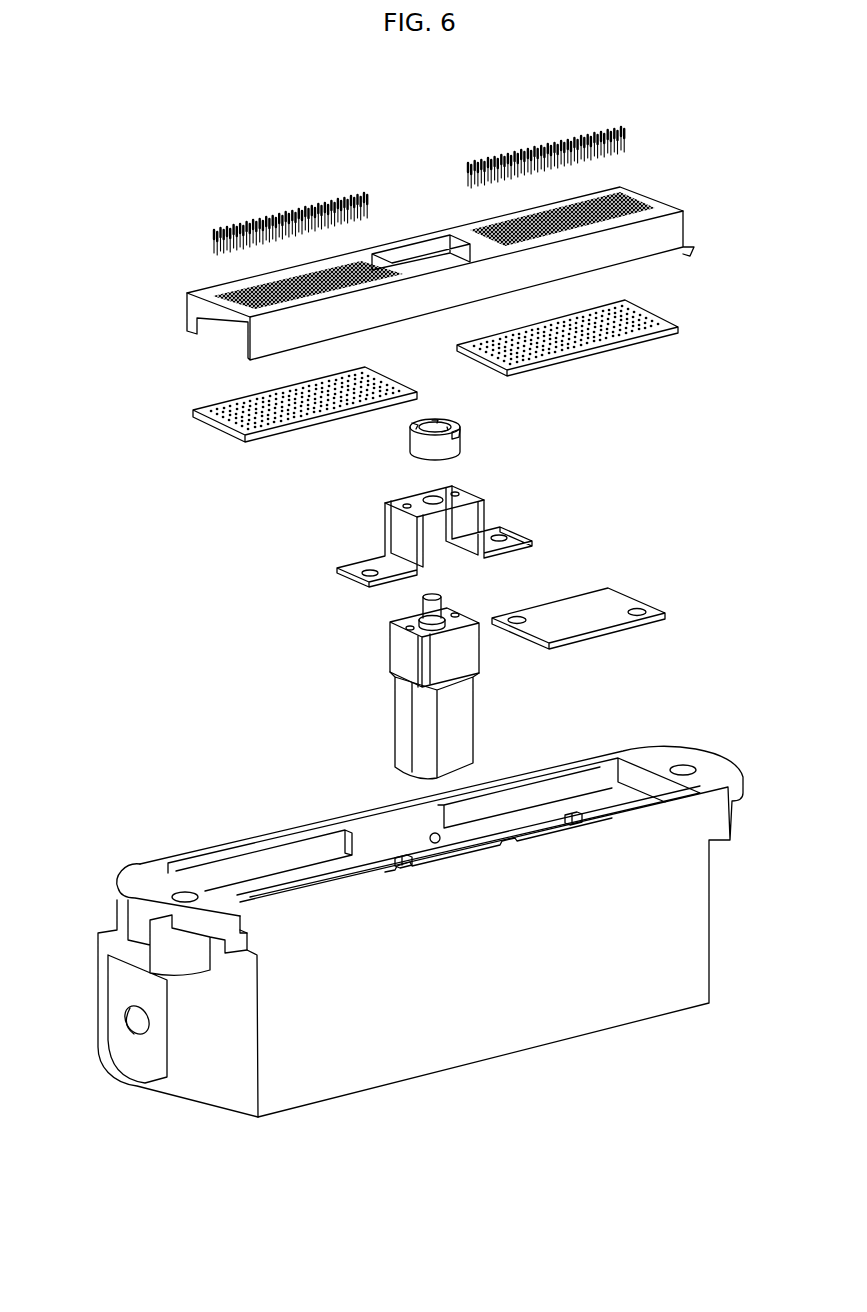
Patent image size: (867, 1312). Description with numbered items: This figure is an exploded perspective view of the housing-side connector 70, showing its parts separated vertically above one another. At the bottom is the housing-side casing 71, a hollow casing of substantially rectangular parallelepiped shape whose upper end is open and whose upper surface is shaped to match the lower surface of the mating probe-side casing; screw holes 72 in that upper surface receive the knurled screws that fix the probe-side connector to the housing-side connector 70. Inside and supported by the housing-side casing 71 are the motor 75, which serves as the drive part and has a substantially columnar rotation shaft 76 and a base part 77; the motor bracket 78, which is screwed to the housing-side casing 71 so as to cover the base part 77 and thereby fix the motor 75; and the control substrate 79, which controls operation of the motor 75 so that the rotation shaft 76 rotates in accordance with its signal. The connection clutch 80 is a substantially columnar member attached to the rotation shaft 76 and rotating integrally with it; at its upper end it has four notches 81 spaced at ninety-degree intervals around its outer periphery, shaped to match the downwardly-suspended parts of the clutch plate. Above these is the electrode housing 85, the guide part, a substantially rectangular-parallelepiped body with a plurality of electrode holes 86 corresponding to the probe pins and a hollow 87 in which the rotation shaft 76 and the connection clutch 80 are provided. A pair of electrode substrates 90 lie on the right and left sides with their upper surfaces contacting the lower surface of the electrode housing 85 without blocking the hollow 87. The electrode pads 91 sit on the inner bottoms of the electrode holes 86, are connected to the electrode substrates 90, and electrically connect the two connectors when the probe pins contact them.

The housing-side connector 70 is at (732, 92).
The housing-side casing 71 is at (711, 908).
The screw holes 72 is at (167, 893).
The motor 75 is at (339, 588).
The rotation shaft 76 is at (420, 607).
The base part 77 is at (396, 712).
The motor bracket 78 is at (488, 507).
The control substrate 79 is at (627, 597).
The connection clutch 80 is at (462, 428).
The notches 81 is at (456, 437).
The electrode housing 85 is at (691, 213).
The electrode holes 86 is at (632, 198).
The hollow 87 is at (423, 250).
The electrode substrates 90 is at (667, 318).
The electrode pads 91 is at (625, 132).